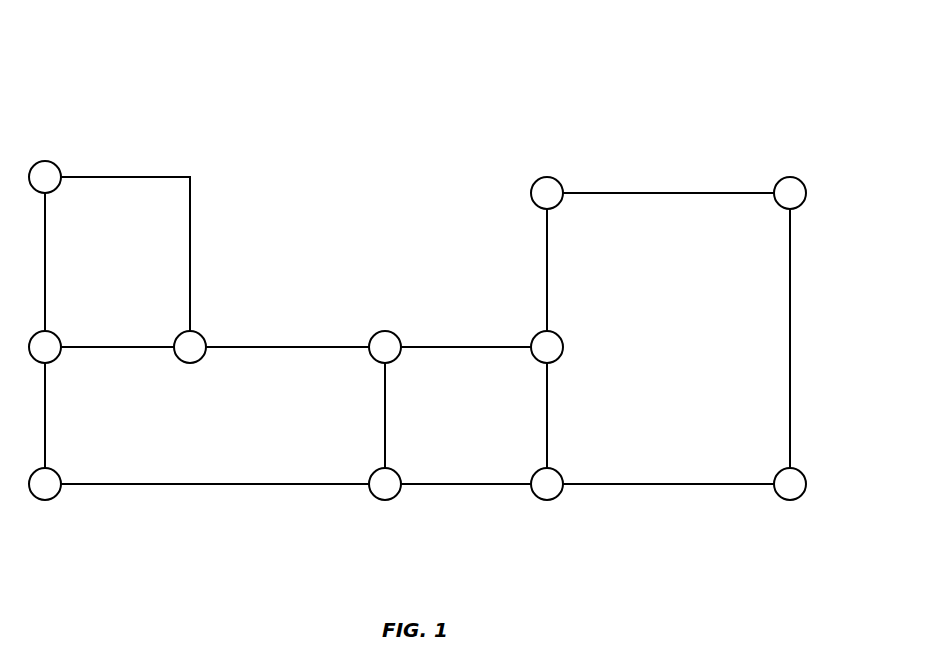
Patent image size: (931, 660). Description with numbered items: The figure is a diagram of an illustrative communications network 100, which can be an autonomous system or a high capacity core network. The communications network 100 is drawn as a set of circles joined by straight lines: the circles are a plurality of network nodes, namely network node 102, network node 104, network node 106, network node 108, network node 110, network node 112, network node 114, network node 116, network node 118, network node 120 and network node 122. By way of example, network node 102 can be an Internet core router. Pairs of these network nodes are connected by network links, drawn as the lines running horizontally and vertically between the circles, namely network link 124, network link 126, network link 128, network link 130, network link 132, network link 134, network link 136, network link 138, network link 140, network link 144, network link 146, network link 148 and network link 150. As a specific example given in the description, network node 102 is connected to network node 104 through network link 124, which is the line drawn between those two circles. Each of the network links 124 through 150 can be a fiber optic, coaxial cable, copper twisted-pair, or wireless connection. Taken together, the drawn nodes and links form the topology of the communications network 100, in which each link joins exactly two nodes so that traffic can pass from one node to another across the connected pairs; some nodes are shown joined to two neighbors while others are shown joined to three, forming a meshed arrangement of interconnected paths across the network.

The communications network 100 is at (418, 128).
The network node 102 is at (381, 332).
The network node 104 is at (561, 340).
The network node 106 is at (546, 177).
The network node 108 is at (795, 178).
The network node 110 is at (792, 468).
The network node 112 is at (549, 468).
The network node 114 is at (387, 468).
The network node 116 is at (48, 468).
The network node 118 is at (47, 331).
The network node 120 is at (50, 163).
The network node 122 is at (192, 331).
The network link 124 is at (465, 345).
The network link 126 is at (547, 256).
The network link 128 is at (643, 195).
The network link 130 is at (790, 337).
The network link 132 is at (645, 484).
The network link 134 is at (549, 418).
The network link 136 is at (450, 486).
The network link 138 is at (385, 418).
The network link 140 is at (190, 484).
The network link 144 is at (127, 348).
The network link 146 is at (45, 257).
The network link 148 is at (190, 225).
The network link 150 is at (262, 349).